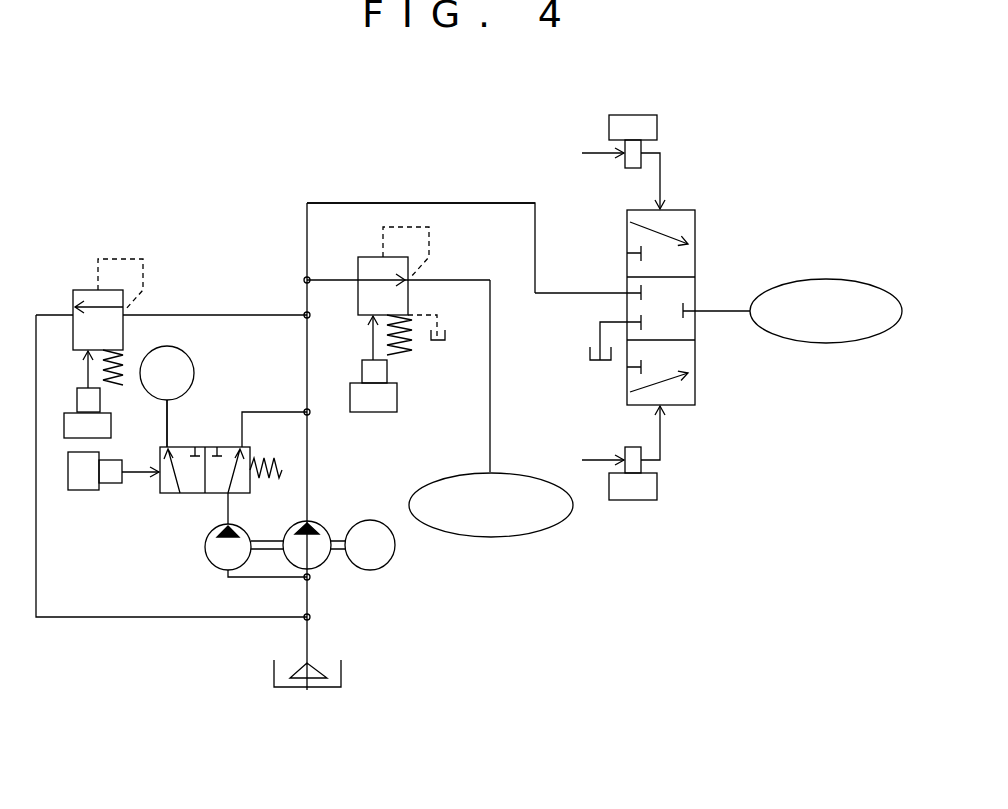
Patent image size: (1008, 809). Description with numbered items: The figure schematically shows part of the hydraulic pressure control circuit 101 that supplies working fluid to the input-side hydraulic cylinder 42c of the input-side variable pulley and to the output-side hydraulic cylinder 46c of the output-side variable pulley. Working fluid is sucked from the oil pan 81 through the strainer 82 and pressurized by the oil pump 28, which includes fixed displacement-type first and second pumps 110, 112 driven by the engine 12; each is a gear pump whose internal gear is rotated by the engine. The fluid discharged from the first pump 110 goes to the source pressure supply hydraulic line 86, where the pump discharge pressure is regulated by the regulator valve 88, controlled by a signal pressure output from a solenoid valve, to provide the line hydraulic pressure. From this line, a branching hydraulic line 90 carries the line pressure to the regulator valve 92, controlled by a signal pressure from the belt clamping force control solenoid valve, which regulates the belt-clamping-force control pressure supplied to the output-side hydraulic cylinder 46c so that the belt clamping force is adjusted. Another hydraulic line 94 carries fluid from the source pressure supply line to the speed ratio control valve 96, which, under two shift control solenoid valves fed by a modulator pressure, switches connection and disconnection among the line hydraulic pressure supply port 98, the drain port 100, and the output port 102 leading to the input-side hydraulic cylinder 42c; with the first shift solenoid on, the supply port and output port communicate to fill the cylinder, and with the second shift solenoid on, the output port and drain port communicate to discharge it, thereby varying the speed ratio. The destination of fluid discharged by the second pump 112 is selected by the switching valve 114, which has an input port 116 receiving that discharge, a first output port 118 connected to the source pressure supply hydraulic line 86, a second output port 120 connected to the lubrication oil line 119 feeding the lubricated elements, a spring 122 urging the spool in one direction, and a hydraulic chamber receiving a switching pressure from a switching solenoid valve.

The engine 12 is at (375, 527).
The oil pump 28 is at (158, 548).
The input-side hydraulic cylinder 42c is at (828, 292).
The output-side hydraulic cylinder 46c is at (493, 525).
The oil pan 81 is at (341, 670).
The strainer 82 is at (307, 690).
The source pressure supply hydraulic line 86 is at (307, 347).
The regulator valve 88 is at (80, 277).
The hydraulic line 90 is at (330, 280).
The regulator valve 92 is at (432, 270).
The hydraulic line 94 is at (337, 203).
The speed ratio control valve 96 is at (718, 215).
The line hydraulic pressure supply port 98 is at (622, 292).
The drain port 100 is at (627, 320).
The hydraulic pressure control circuit 101 is at (455, 157).
The output port 102 is at (695, 310).
The first pump 110 is at (318, 547).
The second pump 112 is at (215, 552).
The switching valve 114 is at (175, 495).
The input port 116 is at (228, 502).
The first output port 118 is at (245, 447).
The lubrication oil line 119 is at (166, 410).
The second output port 120 is at (170, 443).
The spring 122 is at (278, 474).